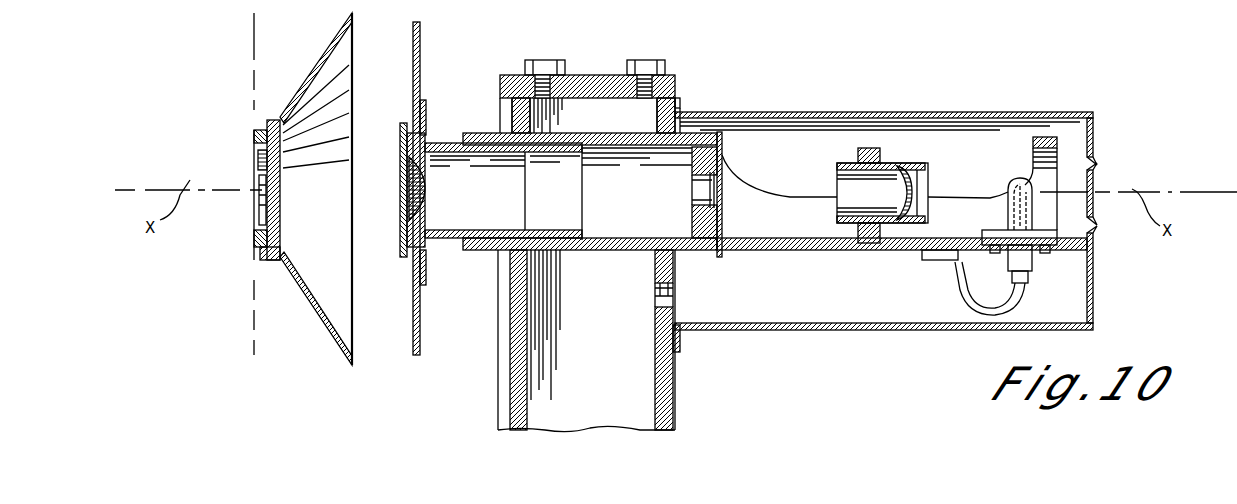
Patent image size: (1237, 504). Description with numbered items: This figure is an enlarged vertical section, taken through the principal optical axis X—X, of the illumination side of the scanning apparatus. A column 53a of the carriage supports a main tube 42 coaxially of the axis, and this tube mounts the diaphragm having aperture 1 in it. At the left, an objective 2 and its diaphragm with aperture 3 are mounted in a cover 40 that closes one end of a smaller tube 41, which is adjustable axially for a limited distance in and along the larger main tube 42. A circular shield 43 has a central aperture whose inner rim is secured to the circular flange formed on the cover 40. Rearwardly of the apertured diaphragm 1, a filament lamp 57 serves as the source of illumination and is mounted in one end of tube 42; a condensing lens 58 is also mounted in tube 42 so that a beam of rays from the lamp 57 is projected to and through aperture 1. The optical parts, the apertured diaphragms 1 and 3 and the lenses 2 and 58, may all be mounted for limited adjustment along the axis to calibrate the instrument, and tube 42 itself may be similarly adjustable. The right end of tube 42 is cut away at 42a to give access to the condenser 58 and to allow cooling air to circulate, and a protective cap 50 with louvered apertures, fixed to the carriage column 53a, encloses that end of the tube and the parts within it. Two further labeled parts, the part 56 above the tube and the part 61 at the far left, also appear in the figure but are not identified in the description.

The aperture 1 is at (723, 195).
The objective 2 is at (417, 180).
The aperture 3 is at (400, 190).
The cover 40 is at (425, 268).
The tube 41 is at (462, 228).
The main tube 42 is at (611, 246).
The cut-away portion 42a is at (786, 196).
The circular shield 43 is at (421, 55).
The protective cap 50 is at (783, 112).
The column 53a is at (667, 394).
The mounting block 56 is at (578, 66).
The filament lamp 57 is at (1021, 190).
The condensing lens 58 is at (921, 166).
The reflector cone 61 is at (318, 70).